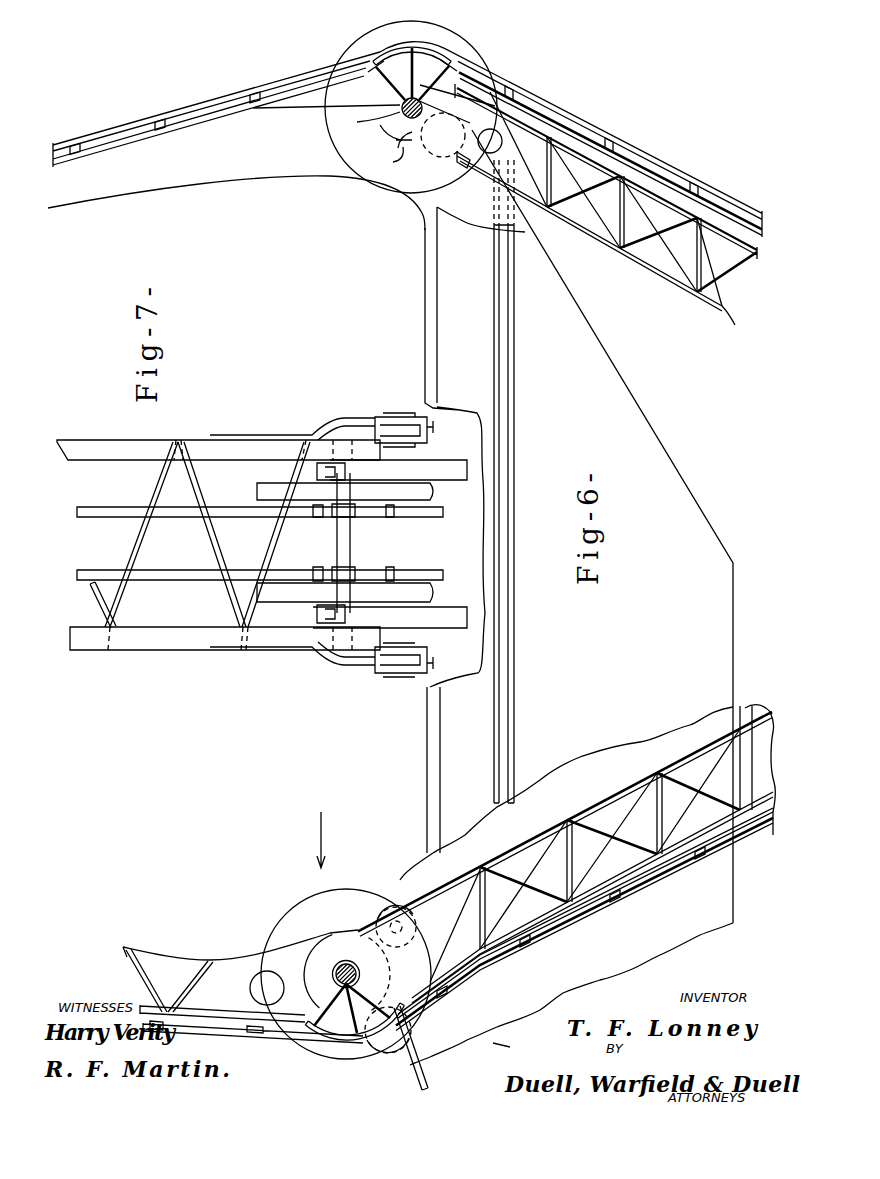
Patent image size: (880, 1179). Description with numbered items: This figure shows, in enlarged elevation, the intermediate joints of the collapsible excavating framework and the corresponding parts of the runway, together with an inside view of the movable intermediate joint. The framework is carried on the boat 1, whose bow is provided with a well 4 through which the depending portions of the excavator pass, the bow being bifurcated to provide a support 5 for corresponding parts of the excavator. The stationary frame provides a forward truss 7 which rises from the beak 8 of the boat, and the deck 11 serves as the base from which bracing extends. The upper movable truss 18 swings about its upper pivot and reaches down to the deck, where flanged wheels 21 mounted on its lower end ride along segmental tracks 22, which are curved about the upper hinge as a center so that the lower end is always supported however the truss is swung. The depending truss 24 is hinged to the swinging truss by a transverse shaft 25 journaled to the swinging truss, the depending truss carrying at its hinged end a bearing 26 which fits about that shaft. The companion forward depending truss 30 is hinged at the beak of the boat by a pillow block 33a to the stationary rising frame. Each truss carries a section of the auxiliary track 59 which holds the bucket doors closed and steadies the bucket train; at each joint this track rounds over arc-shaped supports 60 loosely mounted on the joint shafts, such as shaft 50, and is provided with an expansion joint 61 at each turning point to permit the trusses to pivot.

In FIG. 6, the boat 1 is at (500, 1036).
In FIG. 6, the well 4 is at (566, 886).
In FIG. 6, the right hand support 5 is at (602, 526).
In FIG. 6, the forward truss 7 is at (236, 167).
In FIG. 6, the beak of the boat 8 is at (471, 444).
In FIG. 6, the deck of the boat 11 is at (433, 350).
In FIG. 6, the upper movable truss 18 is at (200, 962).
In FIG. 6, the flanged wheels 21 is at (401, 908).
In FIG. 7, the flanged wheels 21 is at (400, 428).
In FIG. 6, the segmental tracks 22 is at (413, 1085).
In FIG. 7, the segmental tracks 22 is at (428, 433).
In FIG. 6, the depending truss 24 is at (760, 706).
In FIG. 7, the depending truss 24 is at (462, 612).
In FIG. 6, the transverse shaft 25 is at (338, 965).
In FIG. 7, the transverse shaft 25 is at (338, 552).
In FIG. 6, the bearing 26 is at (350, 932).
In FIG. 7, the bearing 26 is at (317, 469).
In FIG. 6, the forward depending truss 30 is at (724, 323).
In FIG. 6, the pillow block 33a is at (397, 167).
In FIG. 6, the joint shaft 50 is at (375, 126).
In FIG. 6, the auxiliary track 59 is at (205, 108).
In FIG. 7, the auxiliary track 59 is at (243, 572).
In FIG. 6, the arc-shaped supports 60 is at (386, 81).
In FIG. 7, the arc-shaped supports 60 is at (387, 568).
In FIG. 6, the expansion joint 61 is at (335, 1075).